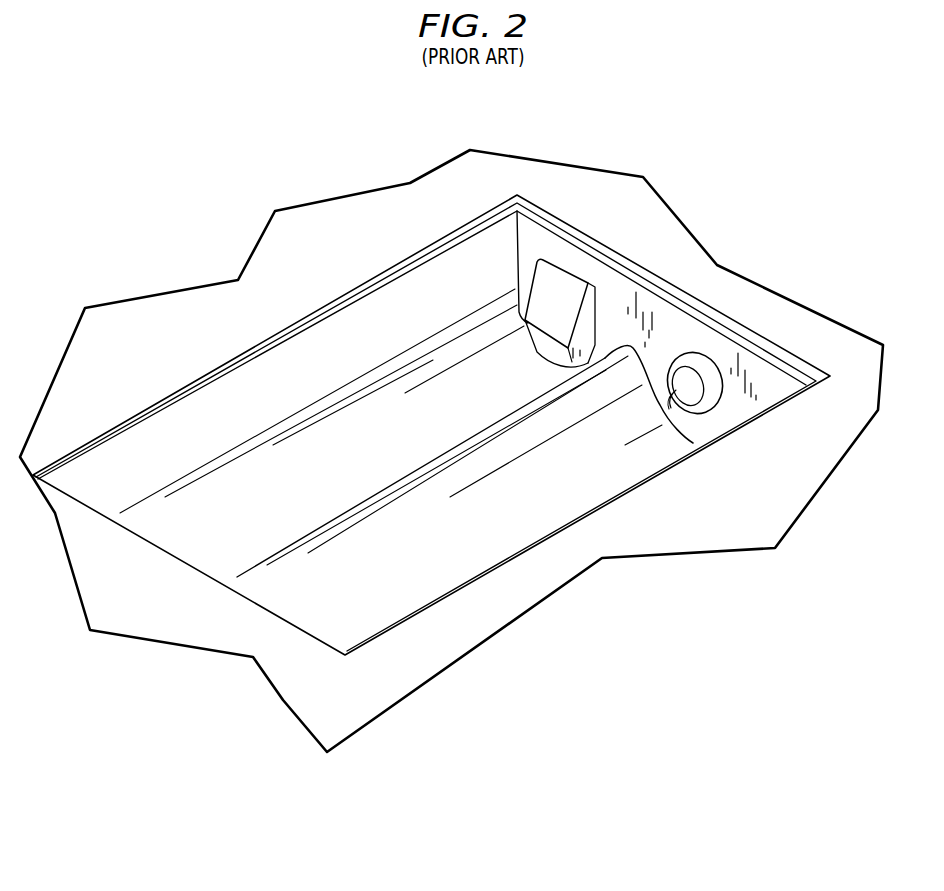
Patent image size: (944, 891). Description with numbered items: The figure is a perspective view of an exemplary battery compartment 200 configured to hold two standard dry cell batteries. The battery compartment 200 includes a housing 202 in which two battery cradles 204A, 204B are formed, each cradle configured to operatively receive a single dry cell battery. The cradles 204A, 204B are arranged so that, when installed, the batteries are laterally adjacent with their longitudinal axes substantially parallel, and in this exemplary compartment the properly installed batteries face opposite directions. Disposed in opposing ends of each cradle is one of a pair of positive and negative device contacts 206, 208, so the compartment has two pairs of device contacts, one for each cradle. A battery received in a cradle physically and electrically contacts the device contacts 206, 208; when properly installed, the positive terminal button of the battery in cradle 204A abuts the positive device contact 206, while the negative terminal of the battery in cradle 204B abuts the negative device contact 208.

The battery compartment 200 is at (517, 660).
The housing 202 is at (652, 228).
The battery cradle 204A is at (147, 527).
The battery cradle 204B is at (282, 587).
The positive device contact 206 is at (563, 283).
The negative device contact 208 is at (698, 353).